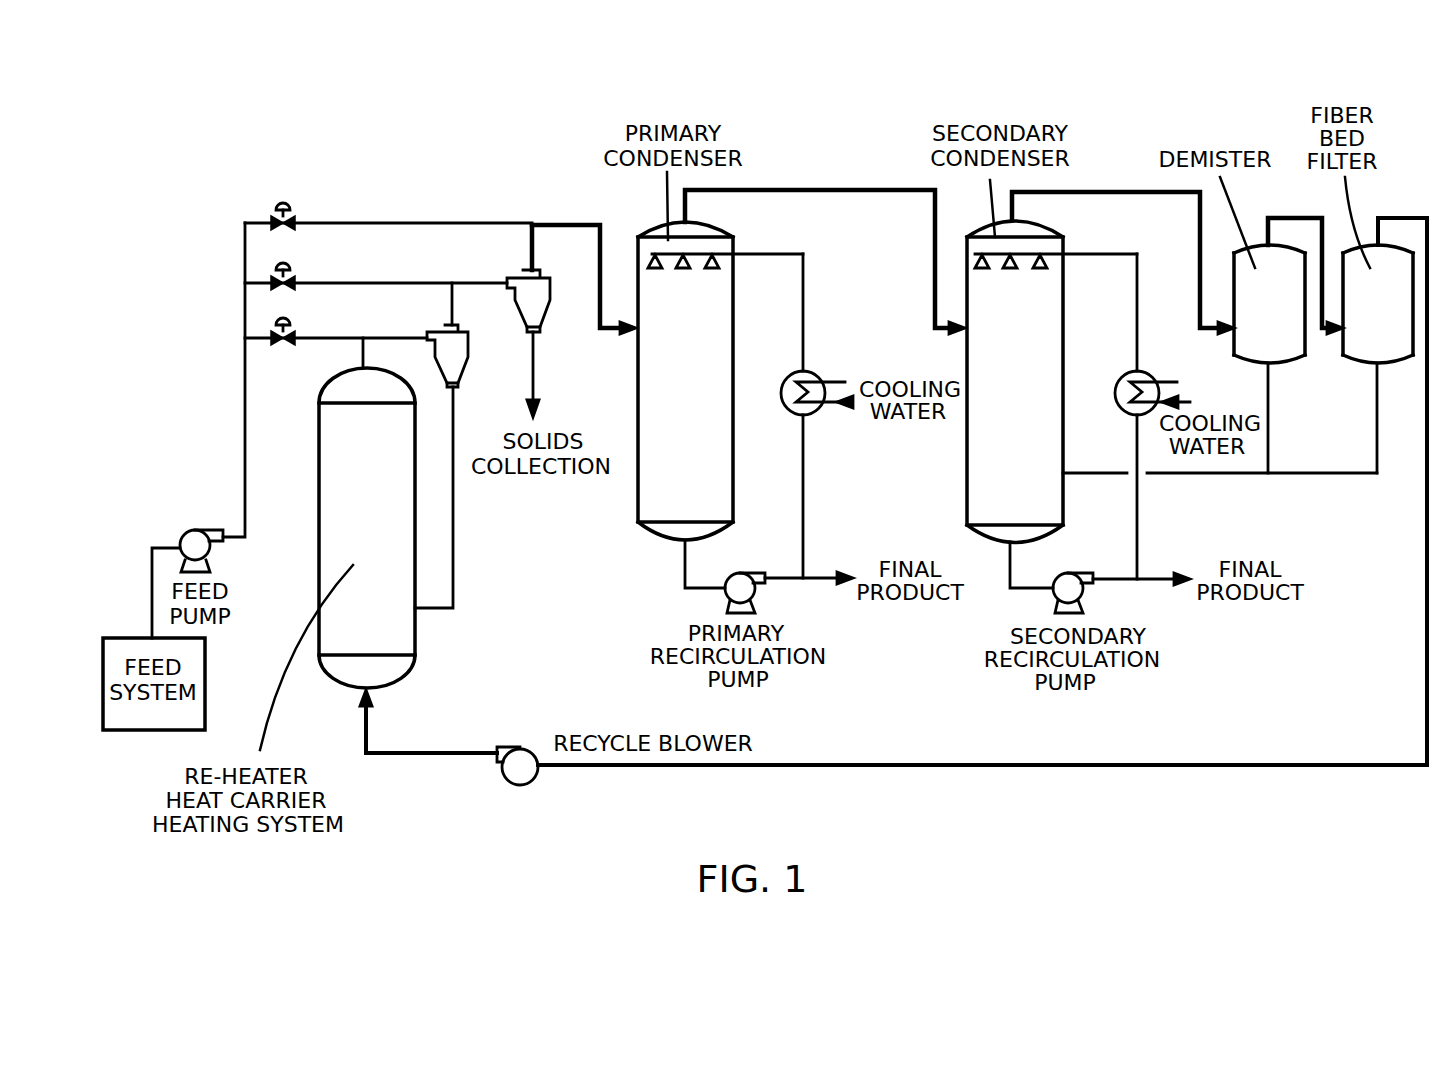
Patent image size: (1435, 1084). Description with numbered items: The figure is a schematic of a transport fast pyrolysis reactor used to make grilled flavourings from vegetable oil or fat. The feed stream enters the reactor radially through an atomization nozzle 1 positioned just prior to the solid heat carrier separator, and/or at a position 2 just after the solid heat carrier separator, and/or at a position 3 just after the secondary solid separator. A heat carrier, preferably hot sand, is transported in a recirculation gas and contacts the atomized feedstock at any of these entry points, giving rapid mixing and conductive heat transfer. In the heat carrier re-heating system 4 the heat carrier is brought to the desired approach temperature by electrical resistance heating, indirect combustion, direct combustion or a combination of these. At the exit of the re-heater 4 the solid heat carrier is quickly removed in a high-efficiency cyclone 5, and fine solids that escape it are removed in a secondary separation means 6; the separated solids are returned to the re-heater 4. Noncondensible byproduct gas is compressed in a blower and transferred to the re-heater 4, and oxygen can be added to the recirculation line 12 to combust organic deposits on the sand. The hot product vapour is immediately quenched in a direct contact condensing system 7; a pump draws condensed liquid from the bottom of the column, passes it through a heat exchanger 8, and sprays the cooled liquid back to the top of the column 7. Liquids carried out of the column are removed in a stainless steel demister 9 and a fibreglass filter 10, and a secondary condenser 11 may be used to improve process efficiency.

The atomization nozzle 1 is at (336, 337).
The feed entry position after solid heat carrier separator 2 is at (376, 287).
The feed entry position after secondary solid separator 3 is at (388, 211).
The heat carrier re-heating system 4 is at (357, 455).
The high-efficiency cyclone 5 is at (457, 360).
The secondary separation means 6 is at (537, 302).
The direct contact condensing system 7 is at (676, 425).
The heat exchanger 8 is at (820, 379).
The stainless steel demister 9 is at (1257, 318).
The fibreglass filter 10 is at (1363, 318).
The secondary condenser 11 is at (1003, 400).
The recirculation line 12 is at (454, 497).